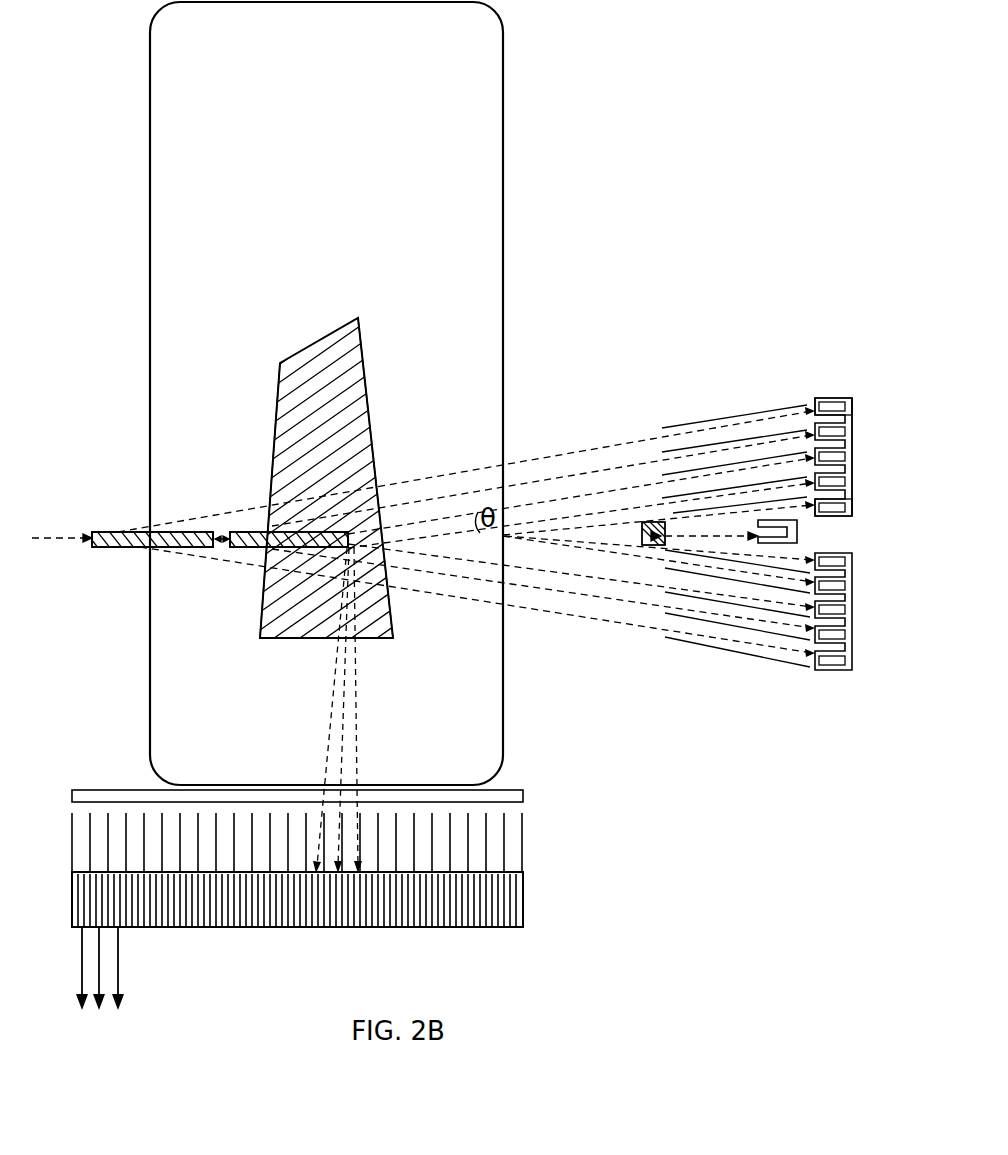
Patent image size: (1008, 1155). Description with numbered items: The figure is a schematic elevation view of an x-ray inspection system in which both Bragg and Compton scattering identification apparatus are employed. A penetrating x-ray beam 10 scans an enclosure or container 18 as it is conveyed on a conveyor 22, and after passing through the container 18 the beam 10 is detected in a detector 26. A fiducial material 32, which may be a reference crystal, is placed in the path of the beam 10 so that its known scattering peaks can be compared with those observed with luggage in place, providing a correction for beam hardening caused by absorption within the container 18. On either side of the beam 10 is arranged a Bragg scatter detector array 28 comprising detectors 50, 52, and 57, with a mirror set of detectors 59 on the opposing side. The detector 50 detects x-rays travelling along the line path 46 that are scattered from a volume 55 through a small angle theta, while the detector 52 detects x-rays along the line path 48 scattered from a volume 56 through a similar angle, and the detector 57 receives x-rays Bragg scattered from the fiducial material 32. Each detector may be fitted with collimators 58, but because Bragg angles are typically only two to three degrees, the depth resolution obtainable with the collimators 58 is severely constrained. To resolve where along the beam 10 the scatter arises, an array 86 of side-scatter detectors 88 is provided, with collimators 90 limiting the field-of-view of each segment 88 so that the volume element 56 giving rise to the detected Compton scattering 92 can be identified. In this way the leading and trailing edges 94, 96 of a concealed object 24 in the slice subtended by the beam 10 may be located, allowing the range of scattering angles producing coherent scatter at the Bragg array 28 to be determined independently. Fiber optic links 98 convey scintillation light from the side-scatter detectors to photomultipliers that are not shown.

The x-ray beam 10 is at (57, 538).
The container 18 is at (503, 82).
The conveyor 22 is at (72, 793).
The concealed object 24 is at (368, 395).
The detector 26 is at (798, 535).
The Bragg scatter detector array 28 is at (830, 398).
The fiducial material 32 is at (657, 545).
The line path 46 is at (630, 440).
The line path 48 is at (568, 477).
The detector 50 is at (853, 402).
The detector 52 is at (853, 438).
The volume 55 is at (175, 530).
The volume element 56 is at (257, 546).
The detector 57 is at (855, 517).
The collimators 58 is at (765, 657).
The mirror set of detectors 59 is at (855, 625).
The array of side-scatter detectors 86 is at (72, 883).
The side-scatter detector segment 88 is at (508, 925).
The collimators 90 is at (488, 839).
The Compton scattering 92 is at (357, 742).
The leading edge 94 is at (383, 530).
The trailing edge 96 is at (270, 527).
The fiber optic links 98 is at (120, 982).